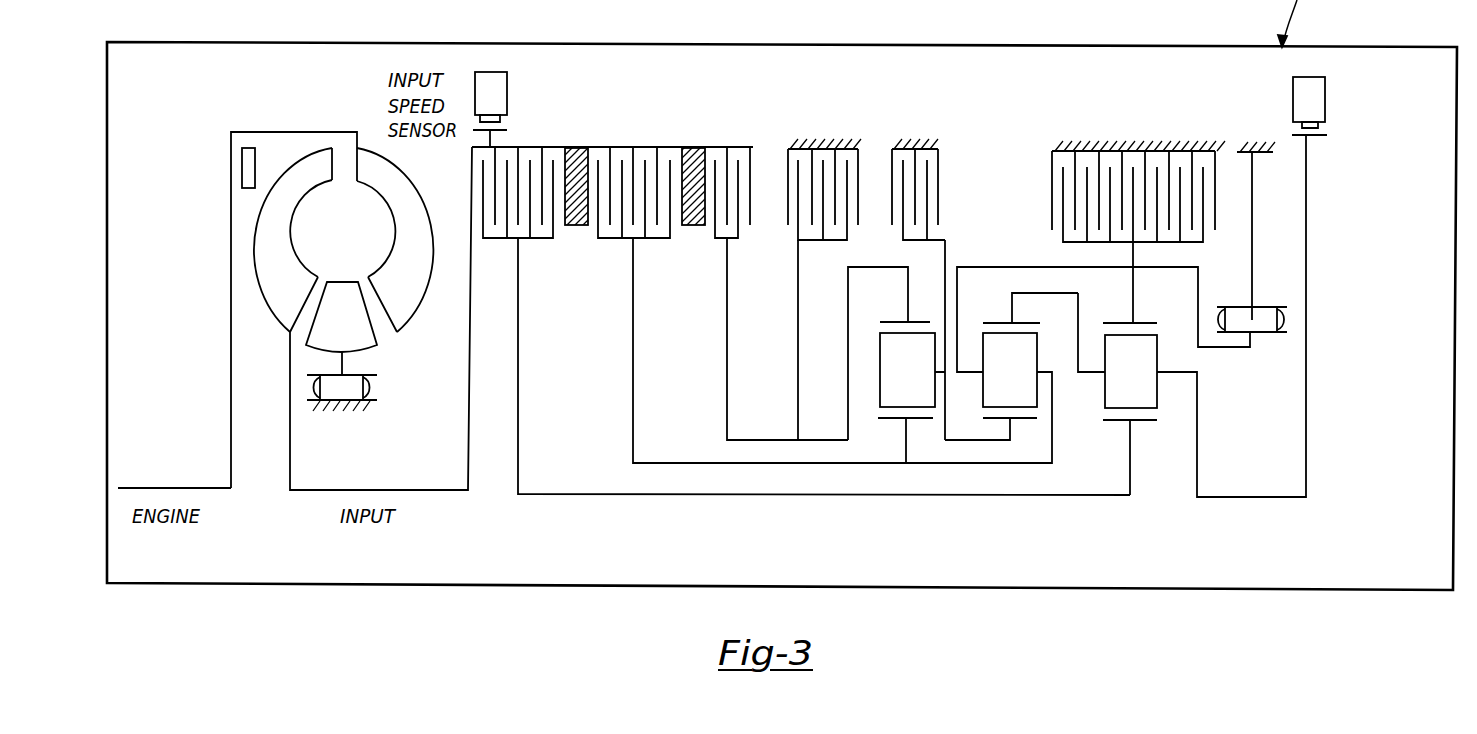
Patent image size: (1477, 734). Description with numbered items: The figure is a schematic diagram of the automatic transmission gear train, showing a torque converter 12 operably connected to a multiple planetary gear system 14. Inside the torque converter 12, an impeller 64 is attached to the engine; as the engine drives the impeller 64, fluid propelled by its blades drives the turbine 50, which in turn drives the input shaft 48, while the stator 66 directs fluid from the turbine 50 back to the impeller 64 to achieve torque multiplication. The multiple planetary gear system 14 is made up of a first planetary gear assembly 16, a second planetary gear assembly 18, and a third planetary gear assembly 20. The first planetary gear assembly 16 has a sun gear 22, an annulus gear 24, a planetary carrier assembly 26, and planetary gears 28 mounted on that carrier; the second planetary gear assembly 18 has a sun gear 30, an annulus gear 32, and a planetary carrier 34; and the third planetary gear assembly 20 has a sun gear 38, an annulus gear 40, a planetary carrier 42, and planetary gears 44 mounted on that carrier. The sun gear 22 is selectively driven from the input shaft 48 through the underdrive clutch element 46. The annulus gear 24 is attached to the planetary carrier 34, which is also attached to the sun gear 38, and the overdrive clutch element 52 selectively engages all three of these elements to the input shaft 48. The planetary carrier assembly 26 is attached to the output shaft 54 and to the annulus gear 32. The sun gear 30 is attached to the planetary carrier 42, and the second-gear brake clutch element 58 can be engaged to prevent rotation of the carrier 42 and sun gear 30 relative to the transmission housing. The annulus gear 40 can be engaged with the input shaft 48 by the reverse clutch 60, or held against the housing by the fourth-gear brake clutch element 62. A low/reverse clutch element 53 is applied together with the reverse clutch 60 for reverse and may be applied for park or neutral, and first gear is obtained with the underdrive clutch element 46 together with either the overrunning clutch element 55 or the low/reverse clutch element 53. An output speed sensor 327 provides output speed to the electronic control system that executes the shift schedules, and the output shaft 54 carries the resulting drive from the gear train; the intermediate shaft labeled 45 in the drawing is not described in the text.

The torque converter 12 is at (250, 120).
The turbine 50 is at (231, 233).
The impeller 64 is at (372, 167).
The stator 66 is at (345, 325).
The input shaft 48 is at (302, 490).
The UD clutch element 46 is at (510, 160).
The OD clutch element 52 is at (604, 160).
The reverse clutch 60 is at (710, 160).
The 4C clutch element 62 is at (795, 160).
The 2C clutch element 58 is at (931, 160).
The LR clutch element 53 is at (1165, 167).
The annulus gear 40 is at (895, 322).
The planetary gears 44 is at (895, 350).
The sun gear 38 is at (878, 418).
The planetary carrier 42 is at (938, 370).
The planetary carrier 34 is at (968, 370).
The annulus gear 32 is at (1028, 293).
The sun gear 30 is at (1010, 441).
The planetary carrier assembly 26 is at (1082, 375).
The multiple planetary gear system 14 is at (885, 498).
The third planetary gear assembly 20 is at (912, 498).
The second planetary gear assembly 18 is at (985, 498).
The first planetary gear assembly 16 is at (1165, 472).
The annulus gear 24 is at (1188, 321).
The planetary gears 28 is at (1145, 390).
The sun gear 22 is at (1157, 420).
The overrunning clutch element 55 is at (1262, 320).
The intermediate shaft 45 is at (556, 496).
The output shaft 54 is at (1293, 500).
The output speed sensor 327 is at (1310, 77).